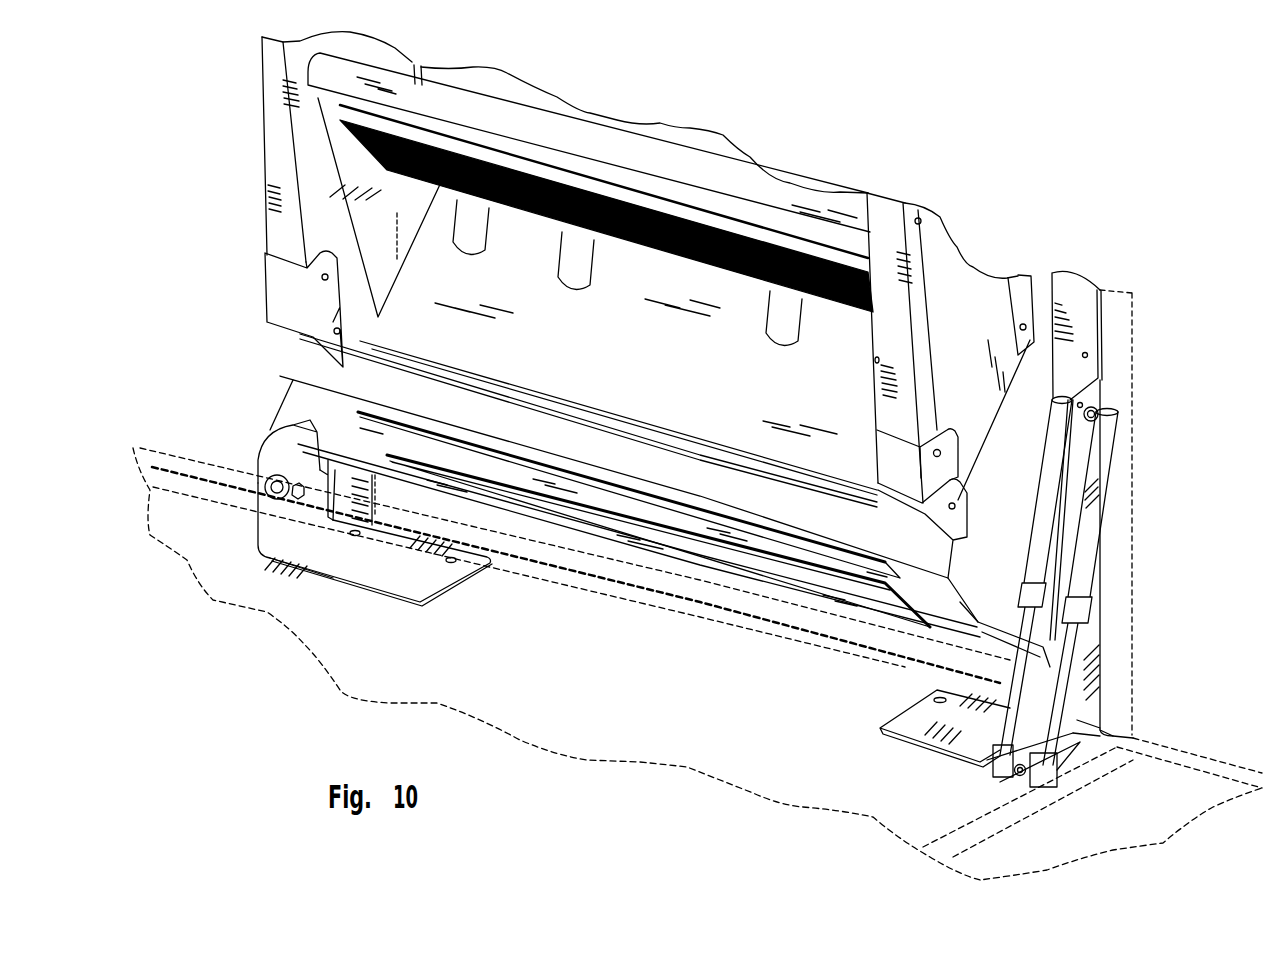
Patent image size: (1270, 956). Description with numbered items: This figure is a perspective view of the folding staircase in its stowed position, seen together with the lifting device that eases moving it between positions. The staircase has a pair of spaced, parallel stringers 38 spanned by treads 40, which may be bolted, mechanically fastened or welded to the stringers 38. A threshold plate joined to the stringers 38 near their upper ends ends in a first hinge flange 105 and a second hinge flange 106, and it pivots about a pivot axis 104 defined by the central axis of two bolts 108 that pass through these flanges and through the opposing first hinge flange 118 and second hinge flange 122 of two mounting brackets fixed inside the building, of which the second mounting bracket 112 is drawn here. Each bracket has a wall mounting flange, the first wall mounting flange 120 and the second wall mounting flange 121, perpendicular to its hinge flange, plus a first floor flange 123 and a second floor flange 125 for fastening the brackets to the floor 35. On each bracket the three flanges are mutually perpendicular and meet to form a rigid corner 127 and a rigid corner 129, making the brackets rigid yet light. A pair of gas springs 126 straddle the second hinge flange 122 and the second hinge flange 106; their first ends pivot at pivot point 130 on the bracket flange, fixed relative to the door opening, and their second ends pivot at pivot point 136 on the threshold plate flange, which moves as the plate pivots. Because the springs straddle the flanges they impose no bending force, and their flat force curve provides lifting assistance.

The floor 35 is at (610, 714).
The stringers 38 is at (993, 290).
The treads 40 is at (684, 170).
The pivot axis 104 is at (1080, 742).
The first hinge flange 105 is at (277, 460).
The second hinge flange 106 is at (1033, 750).
The bolts 108 is at (322, 517).
The second mounting bracket 112 is at (1087, 635).
The first hinge flange 118 is at (300, 502).
The first wall mounting flange 120 is at (355, 507).
The second wall mounting flange 121 is at (1079, 290).
The second hinge flange 122 is at (1090, 660).
The first floor flange 123 is at (445, 572).
The second floor flange 125 is at (913, 727).
The gas springs 126 is at (1097, 507).
The rigid corner 127 is at (296, 503).
The rigid corner 129 is at (1100, 735).
The pivot point 130 is at (1099, 405).
The pivot point 136 is at (1022, 780).